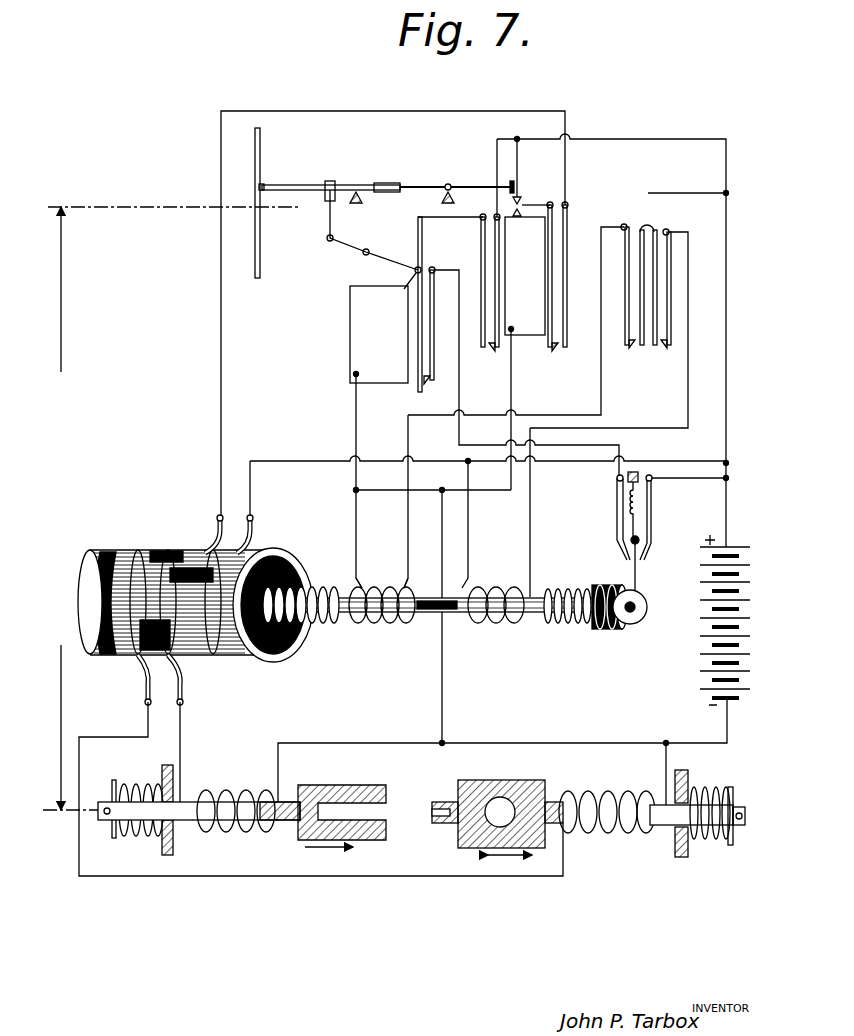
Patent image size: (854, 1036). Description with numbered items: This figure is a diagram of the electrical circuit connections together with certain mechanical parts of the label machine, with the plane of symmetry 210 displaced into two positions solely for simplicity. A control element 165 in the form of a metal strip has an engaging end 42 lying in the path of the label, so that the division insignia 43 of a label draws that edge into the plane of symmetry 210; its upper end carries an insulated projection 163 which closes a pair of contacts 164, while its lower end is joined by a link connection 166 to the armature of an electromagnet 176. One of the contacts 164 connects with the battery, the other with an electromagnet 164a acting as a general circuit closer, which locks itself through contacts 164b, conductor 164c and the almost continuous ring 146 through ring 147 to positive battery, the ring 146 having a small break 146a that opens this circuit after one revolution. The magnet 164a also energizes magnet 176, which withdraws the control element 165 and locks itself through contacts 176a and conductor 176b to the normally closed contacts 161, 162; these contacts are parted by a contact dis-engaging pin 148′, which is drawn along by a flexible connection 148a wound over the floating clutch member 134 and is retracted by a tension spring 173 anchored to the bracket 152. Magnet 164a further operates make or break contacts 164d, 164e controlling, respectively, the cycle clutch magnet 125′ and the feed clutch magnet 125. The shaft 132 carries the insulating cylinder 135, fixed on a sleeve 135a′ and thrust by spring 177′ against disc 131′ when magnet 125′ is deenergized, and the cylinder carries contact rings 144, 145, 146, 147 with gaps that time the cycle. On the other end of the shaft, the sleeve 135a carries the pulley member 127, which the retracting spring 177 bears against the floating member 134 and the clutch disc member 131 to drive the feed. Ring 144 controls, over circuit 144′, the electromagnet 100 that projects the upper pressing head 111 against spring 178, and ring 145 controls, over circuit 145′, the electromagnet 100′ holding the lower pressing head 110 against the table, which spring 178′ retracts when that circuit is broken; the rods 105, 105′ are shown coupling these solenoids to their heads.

The division insignia 43 is at (260, 165).
The engaging end of the control element 42 is at (263, 192).
The control element 165 is at (292, 185).
The electrically insulated projection 163 is at (510, 186).
The pair of electrical contacts 164 is at (522, 200).
The conductor 164c is at (408, 111).
The plane of symmetry 210 is at (142, 205).
The link connection 166 is at (340, 250).
The electromagnet 176 is at (379, 437).
The contacts 176a is at (422, 394).
The conductor 176b is at (460, 383).
The electromagnet 164a is at (525, 353).
The contacts 164b is at (556, 352).
The make or break contact 164d is at (631, 352).
The make or break contact 164e is at (661, 355).
The bracket 152 is at (628, 478).
The tension spring 173 is at (630, 502).
The contact 161 is at (617, 520).
The contact 162 is at (652, 510).
The contact dis-engaging pin 148′ is at (640, 542).
The flexible connection 148a is at (633, 570).
The clutch disc member 131 is at (636, 598).
The shaft 132 is at (430, 612).
The intermediate freely floating member 134 is at (625, 630).
The pulley member 127 is at (598, 630).
The retracting spring 177 is at (562, 624).
The spring 177′ is at (333, 624).
The iron clad electromagnet 125 is at (505, 624).
The iron clad electromagnet 125′ is at (386, 624).
The sleeve 135a is at (470, 585).
The sleeve 135a′ is at (400, 583).
The disc 131′ is at (98, 560).
The cylinder 135 is at (112, 552).
The break 146a is at (192, 568).
The contact ring 146 is at (200, 640).
The contact ring 147 is at (240, 650).
The contact ring 144 is at (110, 648).
The contact ring 145 is at (140, 598).
The circuit 145′ is at (182, 745).
The spring 178′ is at (136, 840).
The spiral spring 178 is at (702, 840).
The electromagnet 100′ is at (238, 832).
The electromagnet 100 is at (612, 834).
The rod 105′ is at (283, 822).
The rod 105 is at (552, 824).
The lower pressing head 110 is at (338, 785).
The pressing head 111 is at (492, 780).
The circuit 144′ is at (330, 878).